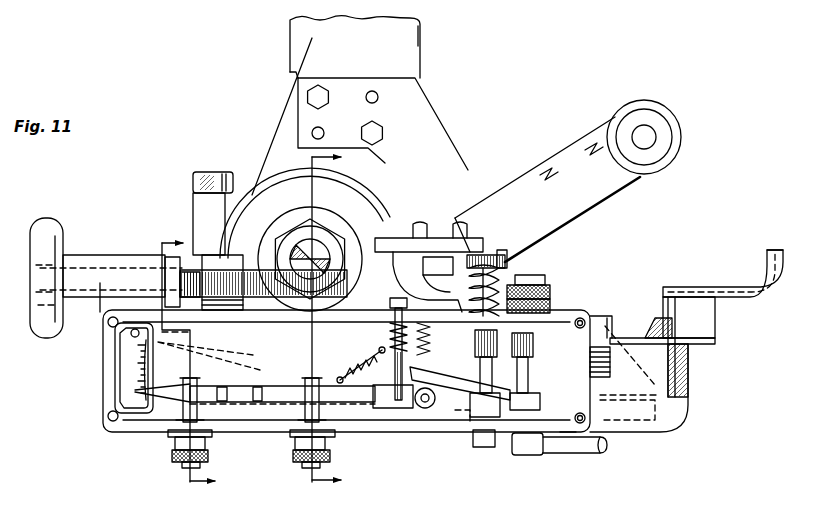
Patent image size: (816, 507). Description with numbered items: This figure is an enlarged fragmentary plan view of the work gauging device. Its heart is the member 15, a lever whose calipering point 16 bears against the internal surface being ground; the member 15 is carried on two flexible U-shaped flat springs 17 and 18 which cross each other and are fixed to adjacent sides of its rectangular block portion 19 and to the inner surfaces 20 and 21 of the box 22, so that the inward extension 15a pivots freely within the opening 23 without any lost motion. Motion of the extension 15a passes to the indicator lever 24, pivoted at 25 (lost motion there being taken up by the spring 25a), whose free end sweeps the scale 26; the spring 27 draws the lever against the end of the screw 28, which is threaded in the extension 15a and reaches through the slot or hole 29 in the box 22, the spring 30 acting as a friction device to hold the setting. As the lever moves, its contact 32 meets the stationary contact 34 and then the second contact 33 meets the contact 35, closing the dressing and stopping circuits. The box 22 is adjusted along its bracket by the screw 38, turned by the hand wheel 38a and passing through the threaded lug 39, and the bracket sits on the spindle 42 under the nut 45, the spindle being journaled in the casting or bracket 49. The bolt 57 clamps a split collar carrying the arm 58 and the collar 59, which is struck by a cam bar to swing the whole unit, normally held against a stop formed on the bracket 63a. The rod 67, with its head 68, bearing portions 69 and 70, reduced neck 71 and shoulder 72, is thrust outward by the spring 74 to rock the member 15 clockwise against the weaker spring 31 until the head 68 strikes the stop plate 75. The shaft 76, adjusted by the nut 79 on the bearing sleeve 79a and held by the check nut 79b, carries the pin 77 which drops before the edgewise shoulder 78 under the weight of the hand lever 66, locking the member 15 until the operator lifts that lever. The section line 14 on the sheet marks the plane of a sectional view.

The section line 14- 14 is at (174, 363).
The member 15 is at (733, 280).
The inward extension 15a is at (568, 395).
The calipering point 16 is at (767, 250).
The flexible U-shaped flat spring 17 is at (714, 344).
The flexible U-shaped flat spring 18 is at (673, 320).
The rectangular block portion 19 is at (700, 320).
The inner surface 20 is at (642, 334).
The inner surface 21 is at (680, 380).
The box 22 is at (112, 399).
The opening 23 is at (655, 400).
The indicator lever 24 is at (360, 403).
The pivot bearing 25 is at (423, 404).
The spring 25a is at (431, 342).
The scale 26 is at (122, 370).
The spring 27 is at (366, 366).
The screw 28 is at (403, 306).
The slot or hole 29 is at (392, 318).
The spring 30 is at (410, 330).
The spring 31 is at (614, 335).
The contact 32 is at (308, 407).
The second contact 33 is at (183, 407).
The stationary terminal contact 34 is at (303, 416).
The stationary terminal contact 35 is at (187, 405).
The screw 38 is at (258, 270).
The hand wheel 38a is at (48, 232).
The threaded lug 39 is at (218, 262).
The spindle 42 is at (308, 252).
The nut 45 is at (327, 237).
The casting or bracket 49 is at (305, 57).
The bolt 57 is at (213, 202).
The arm 58 is at (590, 145).
The collar 59 is at (660, 106).
The bracket 63a is at (426, 121).
The hand lever 66 is at (588, 446).
The rod 67 is at (501, 268).
The head 68 is at (501, 258).
The bearing portion 69 is at (477, 350).
The bearing portion 70 is at (483, 442).
The reduced neck 71 is at (450, 415).
The shoulder 72 is at (481, 368).
The spring 74 is at (504, 283).
The stop plate 75 is at (485, 262).
The shaft 76 is at (527, 405).
The pin 77 is at (523, 410).
The edgewise shoulder 78 is at (538, 395).
The adjusting nut 79 is at (551, 306).
The bearing sleeve 79a is at (546, 279).
The check nut 79b is at (551, 292).